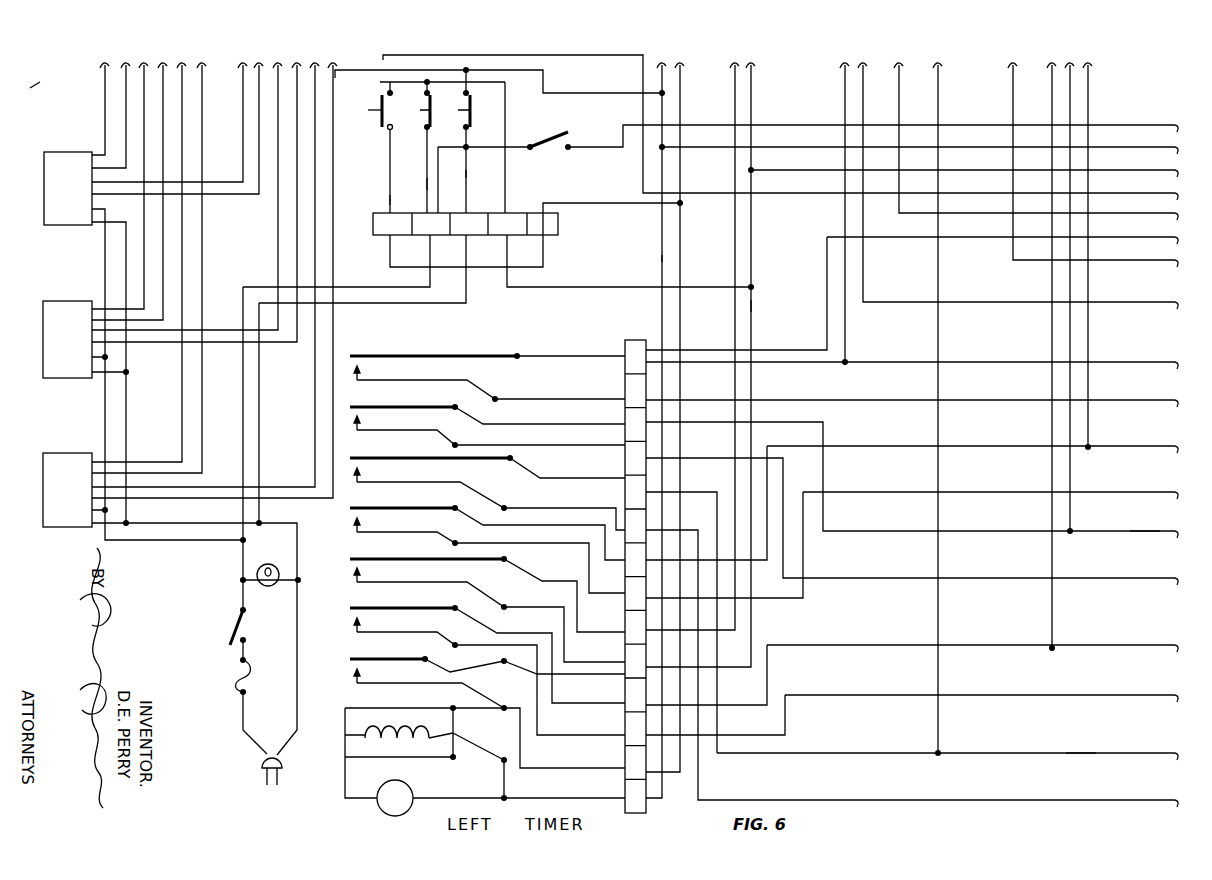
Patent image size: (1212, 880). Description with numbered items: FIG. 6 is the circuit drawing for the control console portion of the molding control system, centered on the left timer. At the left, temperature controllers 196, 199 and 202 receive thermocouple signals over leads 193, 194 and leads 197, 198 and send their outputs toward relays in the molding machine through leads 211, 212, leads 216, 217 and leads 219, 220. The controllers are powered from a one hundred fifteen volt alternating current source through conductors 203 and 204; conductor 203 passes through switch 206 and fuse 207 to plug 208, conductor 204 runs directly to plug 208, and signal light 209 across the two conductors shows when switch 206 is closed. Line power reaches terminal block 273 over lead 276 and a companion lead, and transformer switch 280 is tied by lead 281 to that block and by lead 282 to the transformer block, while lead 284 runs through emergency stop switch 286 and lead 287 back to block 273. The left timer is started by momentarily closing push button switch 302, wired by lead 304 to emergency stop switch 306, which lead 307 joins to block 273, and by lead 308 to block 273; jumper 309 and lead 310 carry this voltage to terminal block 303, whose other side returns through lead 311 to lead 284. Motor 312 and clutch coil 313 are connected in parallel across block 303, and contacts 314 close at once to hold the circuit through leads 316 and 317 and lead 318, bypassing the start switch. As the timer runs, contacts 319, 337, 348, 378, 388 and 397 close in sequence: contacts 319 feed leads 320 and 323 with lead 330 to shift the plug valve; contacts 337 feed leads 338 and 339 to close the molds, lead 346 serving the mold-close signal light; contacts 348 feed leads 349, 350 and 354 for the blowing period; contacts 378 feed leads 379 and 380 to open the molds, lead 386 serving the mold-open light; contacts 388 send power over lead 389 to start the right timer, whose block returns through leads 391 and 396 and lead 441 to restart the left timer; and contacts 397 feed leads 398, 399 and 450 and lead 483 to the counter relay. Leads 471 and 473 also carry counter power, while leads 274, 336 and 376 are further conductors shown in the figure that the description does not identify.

The temperature controller 202 is at (78, 152).
The temperature controller 199 is at (83, 301).
The temperature controller 196 is at (75, 453).
The lead 219 is at (238, 182).
The lead 220 is at (257, 194).
The lead 216 is at (278, 218).
The lead 217 is at (297, 237).
The lead 198 is at (144, 235).
The lead 197 is at (163, 248).
The lead 211 is at (315, 358).
The lead 194 is at (182, 407).
The lead 193 is at (202, 390).
The conductor 204 is at (205, 525).
The conductor 203 is at (215, 541).
The signal light 209 is at (244, 569).
The switch 206 is at (237, 625).
The fuse 207 is at (238, 679).
The plug 208 is at (262, 765).
The lead 471 is at (383, 55).
The lead 473 is at (384, 72).
The lead 304 is at (387, 93).
The push button switch 302 is at (387, 126).
The emergency stop switch 306 is at (425, 125).
The lead 307 is at (427, 183).
The lead 308 is at (390, 200).
The lead 284 is at (548, 93).
The lead 318 is at (541, 93).
The emergency stop switch 286 is at (470, 115).
The switch 280 is at (556, 138).
The lead 282 is at (621, 148).
The lead 281 is at (523, 148).
The lead 287 is at (466, 174).
The terminal block 273 is at (562, 224).
The conductor 274 is at (377, 287).
The lead 276 is at (466, 285).
The jumper 309 is at (545, 243).
The lead 310 is at (640, 205).
The lead 311 is at (660, 258).
The lead 317 is at (595, 287).
The lead 391 is at (665, 69).
The lead 441 is at (683, 70).
The lead 396 is at (755, 70).
The lead 389 is at (732, 242).
The lead 316 is at (753, 302).
The lead 483 is at (827, 313).
The lead 399 is at (845, 97).
The lead 450 is at (863, 111).
The lead 354 is at (899, 74).
The lead 323 is at (1050, 85).
The lead 330 is at (1013, 102).
The lead 350 is at (940, 108).
The lead 339 is at (1090, 69).
The lead 380 is at (1070, 91).
The lead 346 is at (1165, 448).
The lead 398 is at (1154, 400).
The lead 338 is at (1027, 492).
The lead 386 is at (1136, 534).
The lead 379 is at (1139, 578).
The conductor 336 is at (1093, 647).
The lead 320 is at (1103, 695).
The conductor 376 is at (1072, 753).
The lead 349 is at (996, 800).
The terminal block 303 is at (640, 816).
The lead 212 is at (336, 338).
The contacts 397 is at (400, 359).
The contacts 378 is at (400, 409).
The contacts 348 is at (410, 459).
The contacts 337 is at (385, 509).
The contacts 388 is at (400, 559).
The contacts 319 is at (393, 609).
The contacts 314 is at (367, 659).
The clutch coil 313 is at (358, 740).
The motor 312 is at (380, 817).